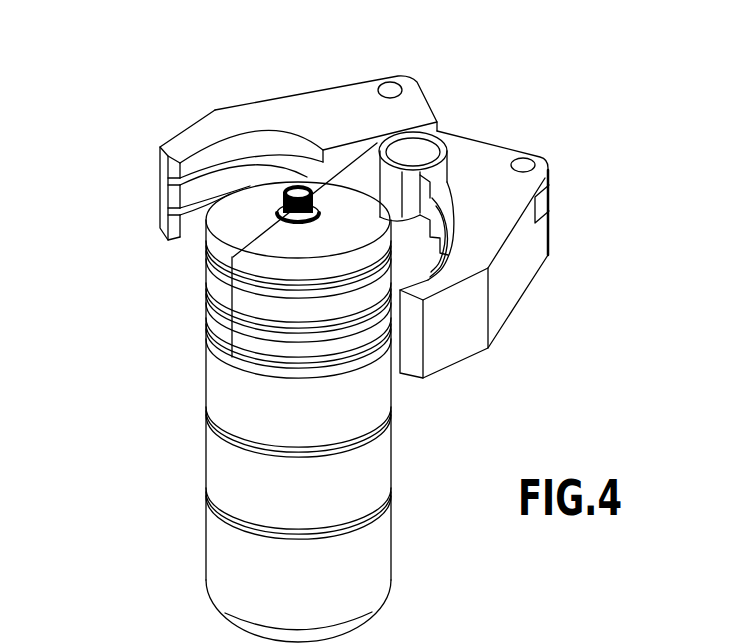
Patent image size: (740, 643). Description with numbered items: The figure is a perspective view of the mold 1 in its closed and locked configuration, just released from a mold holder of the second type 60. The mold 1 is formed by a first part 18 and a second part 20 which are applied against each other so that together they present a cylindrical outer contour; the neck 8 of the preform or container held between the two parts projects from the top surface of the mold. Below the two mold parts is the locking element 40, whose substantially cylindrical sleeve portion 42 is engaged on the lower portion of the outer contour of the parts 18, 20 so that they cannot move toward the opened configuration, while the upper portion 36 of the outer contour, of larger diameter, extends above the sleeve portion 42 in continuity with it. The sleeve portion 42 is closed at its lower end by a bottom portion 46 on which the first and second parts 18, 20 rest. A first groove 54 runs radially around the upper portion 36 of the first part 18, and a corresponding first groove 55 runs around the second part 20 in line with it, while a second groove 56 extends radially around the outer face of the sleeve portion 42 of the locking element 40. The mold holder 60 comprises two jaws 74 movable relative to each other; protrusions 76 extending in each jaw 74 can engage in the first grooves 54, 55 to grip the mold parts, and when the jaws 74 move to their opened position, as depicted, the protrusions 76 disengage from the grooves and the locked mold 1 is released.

The mold 1 is at (138, 497).
The neck 8 is at (312, 192).
The first part 18 is at (230, 225).
The second part 20 is at (340, 237).
The upper portion 36 is at (220, 318).
The locking element 40 is at (218, 563).
The sleeve portion 42 is at (374, 451).
The bottom portion 46 is at (220, 613).
The first groove 54 is at (213, 275).
The first groove 55 is at (350, 282).
The second groove 56 is at (374, 510).
The mold holder of a second type 60 is at (566, 126).
The jaw 74 is at (278, 108).
The protrusion 76 is at (178, 182).